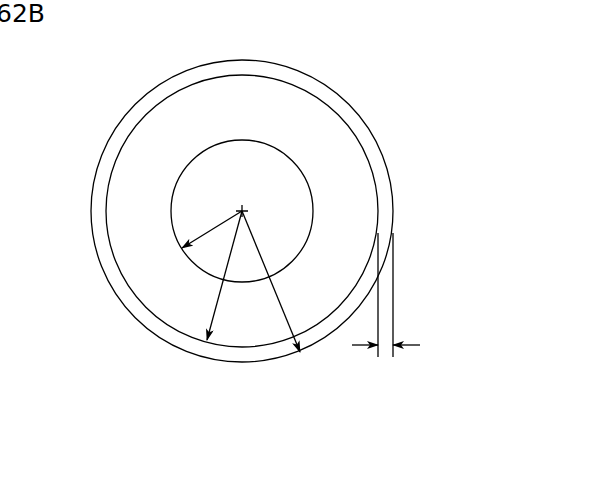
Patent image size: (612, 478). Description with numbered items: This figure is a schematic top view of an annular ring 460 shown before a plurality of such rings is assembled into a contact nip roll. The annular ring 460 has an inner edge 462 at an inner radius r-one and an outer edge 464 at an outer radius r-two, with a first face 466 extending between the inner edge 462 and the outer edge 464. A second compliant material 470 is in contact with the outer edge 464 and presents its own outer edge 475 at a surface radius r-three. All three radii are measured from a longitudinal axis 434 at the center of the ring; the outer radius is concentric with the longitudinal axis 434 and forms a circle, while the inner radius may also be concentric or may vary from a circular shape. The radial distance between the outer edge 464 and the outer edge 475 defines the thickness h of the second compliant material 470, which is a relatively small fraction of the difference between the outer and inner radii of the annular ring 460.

The annular ring 460 is at (374, 44).
The outer edge of the second compliant material 475 is at (183, 70).
The second compliant material 470 is at (379, 161).
The outer edge 464 is at (108, 193).
The first face 466 is at (122, 234).
The inner edge 462 is at (298, 163).
The longitudinal axis 434 is at (242, 211).